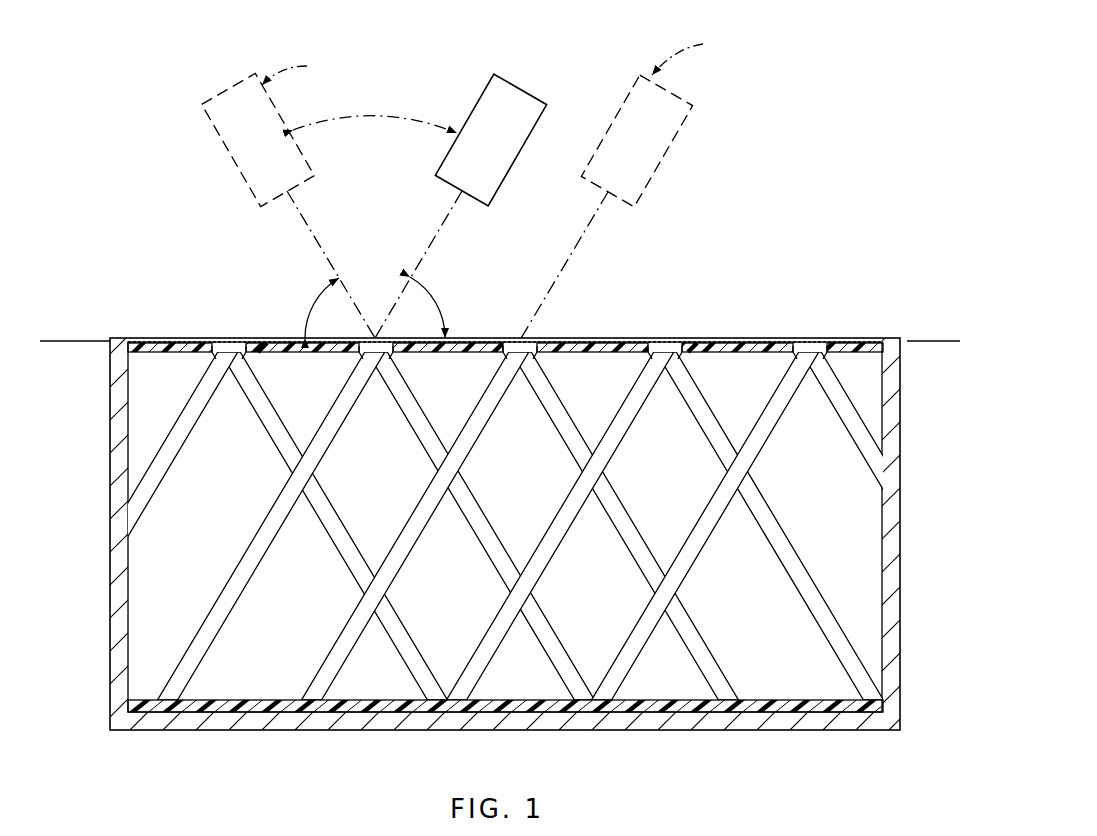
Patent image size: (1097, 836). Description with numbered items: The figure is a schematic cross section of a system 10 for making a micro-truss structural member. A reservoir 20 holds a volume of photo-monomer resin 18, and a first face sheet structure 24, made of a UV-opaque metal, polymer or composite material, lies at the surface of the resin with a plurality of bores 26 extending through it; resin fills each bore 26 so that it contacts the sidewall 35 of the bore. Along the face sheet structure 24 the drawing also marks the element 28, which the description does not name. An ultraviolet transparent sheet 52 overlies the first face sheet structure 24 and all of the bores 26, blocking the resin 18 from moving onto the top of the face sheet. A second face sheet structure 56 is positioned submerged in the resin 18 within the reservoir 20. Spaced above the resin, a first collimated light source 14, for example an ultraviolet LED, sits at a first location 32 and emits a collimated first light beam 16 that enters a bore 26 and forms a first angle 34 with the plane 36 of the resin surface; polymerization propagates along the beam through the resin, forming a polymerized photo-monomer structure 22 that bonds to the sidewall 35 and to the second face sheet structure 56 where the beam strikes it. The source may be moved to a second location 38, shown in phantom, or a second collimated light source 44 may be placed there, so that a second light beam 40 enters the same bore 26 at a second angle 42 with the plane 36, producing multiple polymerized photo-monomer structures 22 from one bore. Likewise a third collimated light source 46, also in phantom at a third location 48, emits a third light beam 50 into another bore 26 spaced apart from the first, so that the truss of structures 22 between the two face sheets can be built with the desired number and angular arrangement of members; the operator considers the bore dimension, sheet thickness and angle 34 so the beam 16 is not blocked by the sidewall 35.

The system 10 is at (757, 108).
The first collimated light source 14 is at (505, 98).
The first light beam 16 is at (430, 243).
The photo-monomer resin 18 is at (168, 585).
The reservoir 20 is at (118, 462).
The polymerized photo-monomer structure 22 is at (328, 432).
The first face sheet structure 24 is at (193, 348).
The bore 26 is at (380, 352).
The bond layer 28 is at (262, 346).
The first location 32 is at (483, 100).
The first angle 34 is at (437, 303).
The sidewall 35 is at (372, 362).
The plane 36 is at (90, 341).
The second location 38 is at (301, 68).
The second light beam 40 is at (300, 212).
The second angle 42 is at (312, 305).
The second collimated light source 44 is at (232, 138).
The third collimated light source 46 is at (672, 102).
The third location 48 is at (696, 51).
The third light beam 50 is at (570, 262).
The ultraviolet transparent sheet 52 is at (548, 344).
The second face sheet structure 56 is at (215, 700).